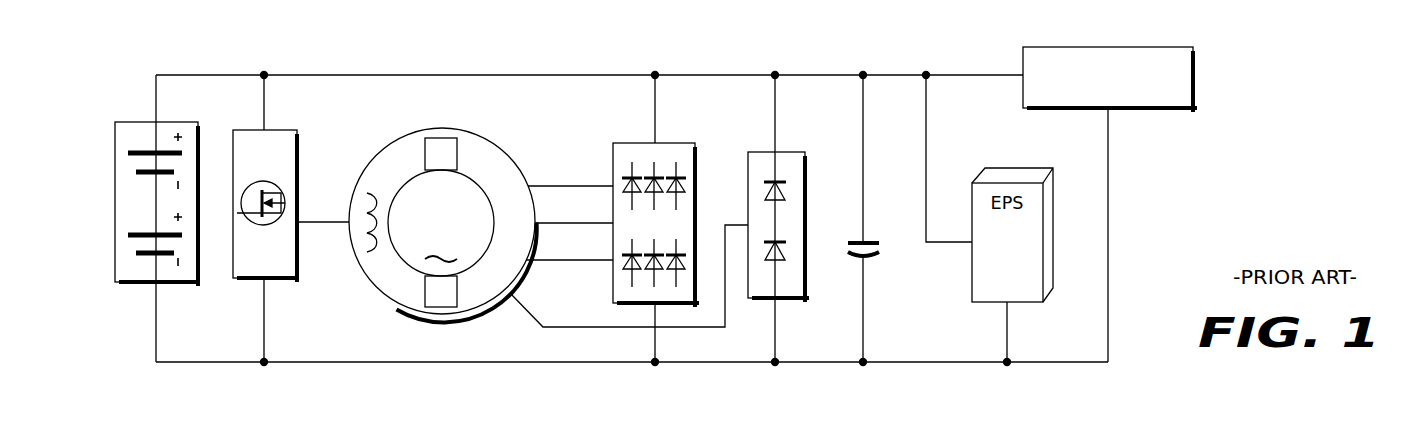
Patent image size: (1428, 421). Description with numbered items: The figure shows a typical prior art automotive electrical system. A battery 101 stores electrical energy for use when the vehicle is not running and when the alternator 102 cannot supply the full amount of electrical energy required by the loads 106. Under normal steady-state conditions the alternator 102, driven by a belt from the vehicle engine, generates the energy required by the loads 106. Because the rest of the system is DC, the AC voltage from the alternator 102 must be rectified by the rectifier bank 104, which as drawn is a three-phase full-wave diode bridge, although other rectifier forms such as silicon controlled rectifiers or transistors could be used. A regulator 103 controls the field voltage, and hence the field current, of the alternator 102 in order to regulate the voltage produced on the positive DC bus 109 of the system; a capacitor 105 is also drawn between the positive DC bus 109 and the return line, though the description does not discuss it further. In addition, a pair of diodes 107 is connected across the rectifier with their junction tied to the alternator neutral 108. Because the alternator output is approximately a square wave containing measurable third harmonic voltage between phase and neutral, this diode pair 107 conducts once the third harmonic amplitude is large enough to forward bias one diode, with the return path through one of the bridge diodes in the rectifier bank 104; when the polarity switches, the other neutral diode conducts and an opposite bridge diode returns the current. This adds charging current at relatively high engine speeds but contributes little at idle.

The battery 101 is at (115, 222).
The alternator 102 is at (455, 128).
The regulator 103 is at (276, 280).
The rectifier bank 104 is at (632, 143).
The capacitor 105 is at (874, 240).
The loads 106 is at (1048, 47).
The pair of diodes 107 is at (805, 152).
The alternator neutral 108 is at (572, 327).
The positive DC bus 109 is at (532, 74).